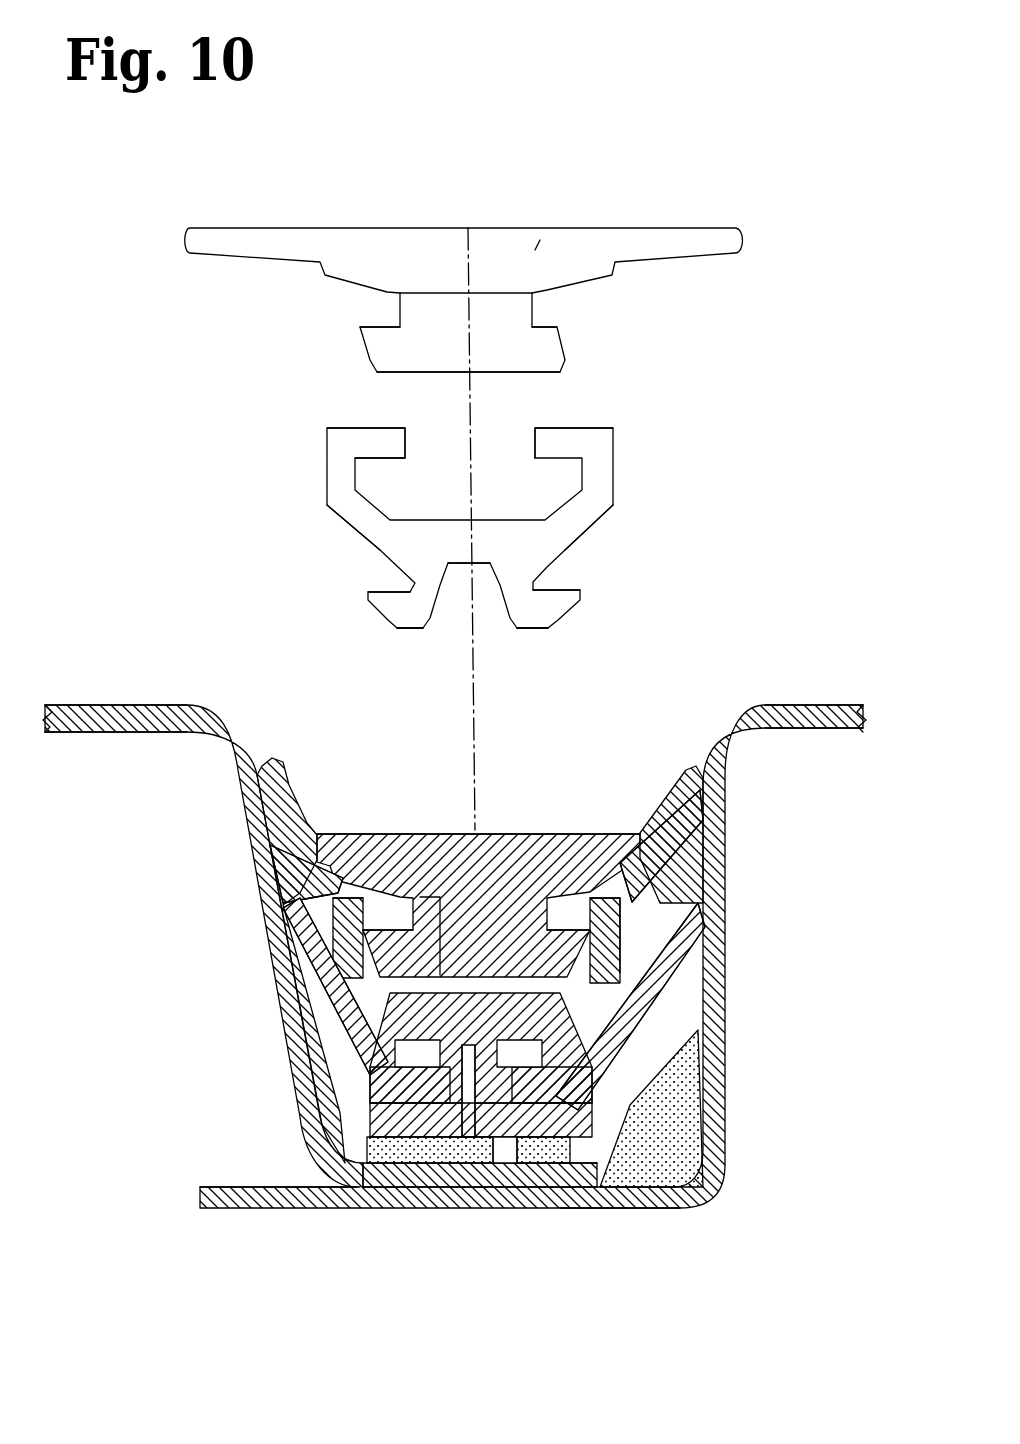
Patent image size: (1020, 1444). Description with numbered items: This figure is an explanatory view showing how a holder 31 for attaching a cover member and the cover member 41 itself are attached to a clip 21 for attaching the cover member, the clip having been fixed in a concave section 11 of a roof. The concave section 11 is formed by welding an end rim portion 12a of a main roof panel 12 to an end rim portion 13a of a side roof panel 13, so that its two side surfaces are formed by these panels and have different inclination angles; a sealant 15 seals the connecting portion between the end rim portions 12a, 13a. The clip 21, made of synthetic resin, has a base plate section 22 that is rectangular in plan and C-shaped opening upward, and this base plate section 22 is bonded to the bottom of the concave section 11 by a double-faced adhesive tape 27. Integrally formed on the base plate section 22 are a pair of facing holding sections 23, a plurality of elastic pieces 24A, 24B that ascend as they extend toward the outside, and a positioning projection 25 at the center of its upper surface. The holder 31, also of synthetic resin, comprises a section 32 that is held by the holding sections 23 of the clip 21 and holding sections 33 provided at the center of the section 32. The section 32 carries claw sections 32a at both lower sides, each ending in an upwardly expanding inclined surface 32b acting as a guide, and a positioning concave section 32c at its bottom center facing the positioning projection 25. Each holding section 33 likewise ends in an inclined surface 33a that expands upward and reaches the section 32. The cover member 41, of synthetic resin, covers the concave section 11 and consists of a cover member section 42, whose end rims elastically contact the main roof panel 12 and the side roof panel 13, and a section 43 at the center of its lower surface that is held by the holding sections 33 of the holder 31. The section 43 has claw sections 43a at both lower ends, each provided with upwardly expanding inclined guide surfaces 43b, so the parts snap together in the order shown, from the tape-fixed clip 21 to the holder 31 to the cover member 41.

The concave section 11 is at (575, 815).
The main roof panel 12 is at (125, 712).
The end rim portion of the main roof panel 12a is at (465, 1210).
The side roof panel 13 is at (800, 708).
The end rim portion of the side roof panel 13a is at (600, 1210).
The sealant 15 is at (725, 1165).
The clip for attaching a cover member 21 is at (665, 1200).
The base plate section 22 is at (380, 1113).
The holding sections 23 is at (377, 1047).
The elastic piece 24A is at (270, 948).
The elastic piece 24B is at (730, 960).
The positioning projection 25 is at (512, 1208).
The double-faced adhesive tape 27 is at (392, 1208).
The holder for attaching the cover member 31 is at (622, 505).
The section to be held 32 is at (440, 566).
The claw sections 32a is at (387, 602).
The inclined surface (guide surface) 32b is at (383, 625).
The positioning concave section 32c is at (463, 572).
The holding sections 33 is at (327, 478).
The inclined surface 33a is at (340, 530).
The cover member 41 is at (470, 217).
The cover member section 42 is at (538, 245).
The section 43 is at (462, 318).
The claw sections 43a is at (367, 328).
The inclined surfaces (guide surfaces) 43b is at (370, 365).